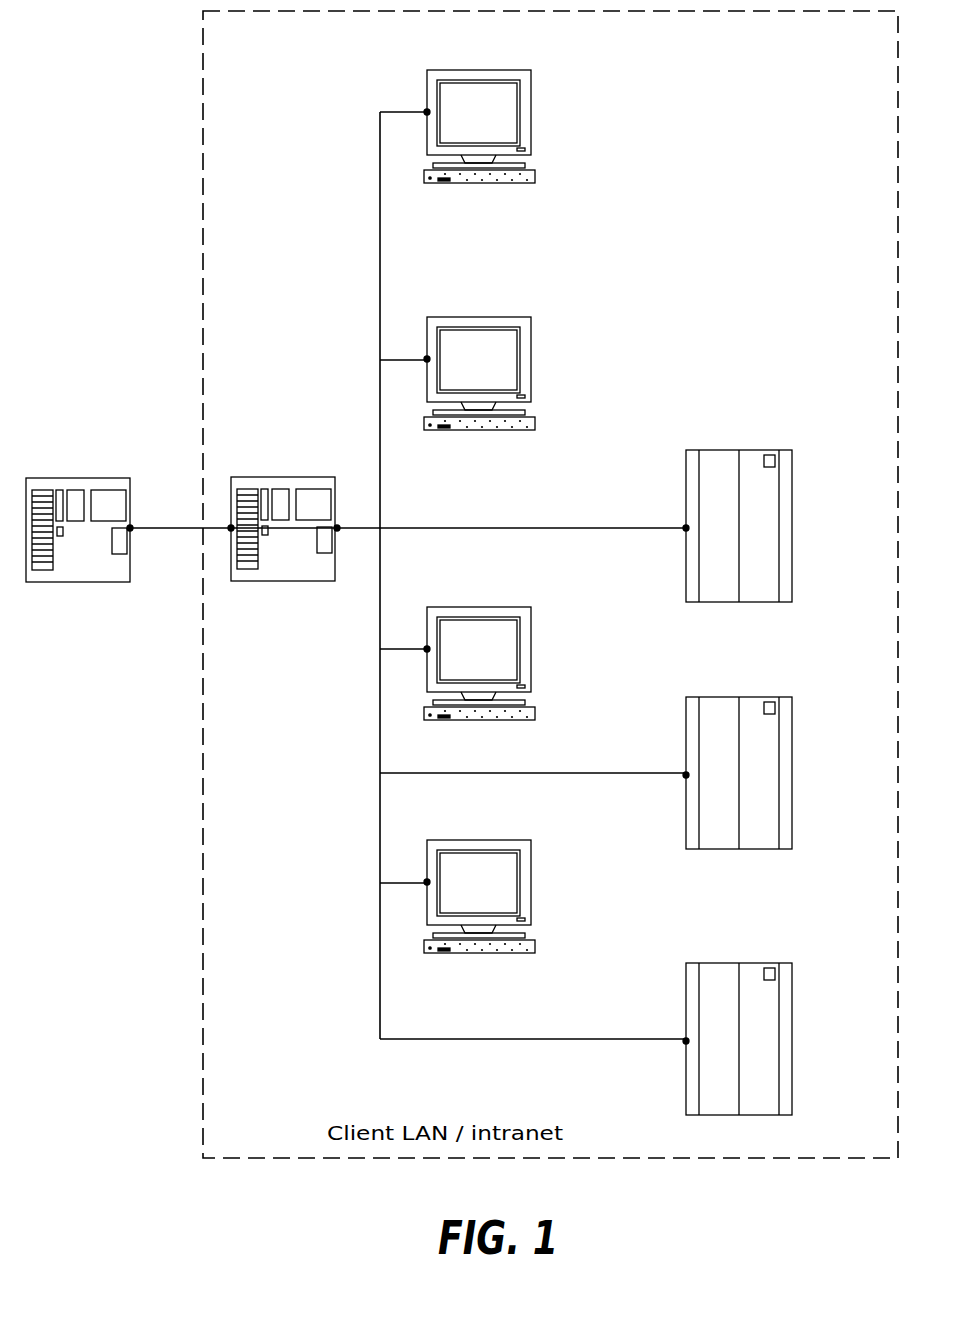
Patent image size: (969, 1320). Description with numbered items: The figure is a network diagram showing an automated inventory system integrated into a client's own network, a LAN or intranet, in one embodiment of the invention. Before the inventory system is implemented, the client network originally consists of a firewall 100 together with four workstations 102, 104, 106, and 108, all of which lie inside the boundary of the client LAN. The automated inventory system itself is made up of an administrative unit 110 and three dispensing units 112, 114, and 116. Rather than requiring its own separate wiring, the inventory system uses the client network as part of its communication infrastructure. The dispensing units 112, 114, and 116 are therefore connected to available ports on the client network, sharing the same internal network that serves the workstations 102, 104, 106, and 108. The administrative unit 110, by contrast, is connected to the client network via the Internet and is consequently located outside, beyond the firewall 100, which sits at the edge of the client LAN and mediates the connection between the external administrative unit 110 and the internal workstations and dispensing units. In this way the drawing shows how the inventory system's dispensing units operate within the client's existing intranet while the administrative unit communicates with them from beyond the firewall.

The firewall 100 is at (303, 477).
The workstation 102 is at (506, 70).
The workstation 104 is at (505, 317).
The workstation 106 is at (505, 606).
The workstation 108 is at (505, 840).
The administrative unit 110 is at (95, 478).
The dispensing unit 112 is at (766, 450).
The dispensing unit 114 is at (766, 697).
The dispensing unit 116 is at (766, 963).